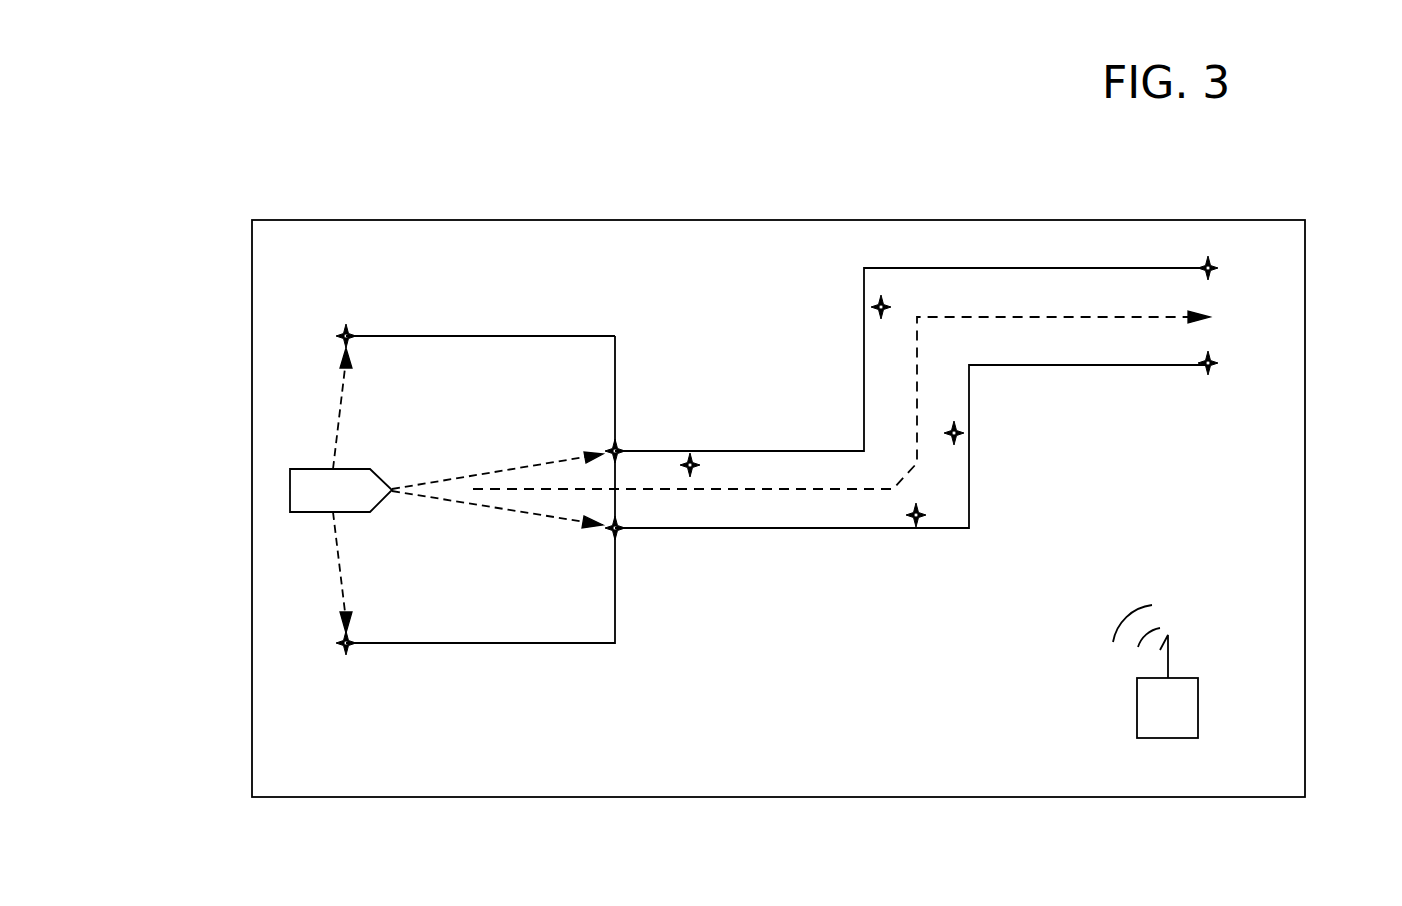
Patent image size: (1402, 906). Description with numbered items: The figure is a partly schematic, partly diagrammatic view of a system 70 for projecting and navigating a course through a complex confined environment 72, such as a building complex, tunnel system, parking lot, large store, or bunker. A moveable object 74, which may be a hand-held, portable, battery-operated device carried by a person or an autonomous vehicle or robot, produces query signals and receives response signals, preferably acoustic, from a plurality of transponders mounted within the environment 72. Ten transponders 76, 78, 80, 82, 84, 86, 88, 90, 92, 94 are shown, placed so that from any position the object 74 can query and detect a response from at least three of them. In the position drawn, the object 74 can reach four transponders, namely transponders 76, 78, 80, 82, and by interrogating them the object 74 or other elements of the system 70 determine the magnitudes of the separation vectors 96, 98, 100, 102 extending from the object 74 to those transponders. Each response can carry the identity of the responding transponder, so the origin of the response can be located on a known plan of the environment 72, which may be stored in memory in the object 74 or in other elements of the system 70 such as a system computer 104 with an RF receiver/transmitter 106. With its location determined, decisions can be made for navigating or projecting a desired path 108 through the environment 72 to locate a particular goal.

The system 70 is at (150, 257).
The environment 72 is at (252, 627).
The object 74 is at (290, 468).
The transponder 76 is at (352, 340).
The transponder 78 is at (346, 648).
The transponder 80 is at (620, 448).
The transponder 82 is at (620, 532).
The transponder 84 is at (697, 460).
The transponder 86 is at (920, 518).
The transponder 88 is at (960, 436).
The transponder 90 is at (881, 306).
The transponder 92 is at (1215, 266).
The transponder 94 is at (1215, 366).
The separation vector 96 is at (340, 418).
The separation vector 98 is at (338, 563).
The separation vector 100 is at (500, 468).
The separation vector 102 is at (500, 512).
The computer 104 is at (1137, 708).
The RF receiver/transmitter 106 is at (1168, 658).
The desired path 108 is at (917, 343).